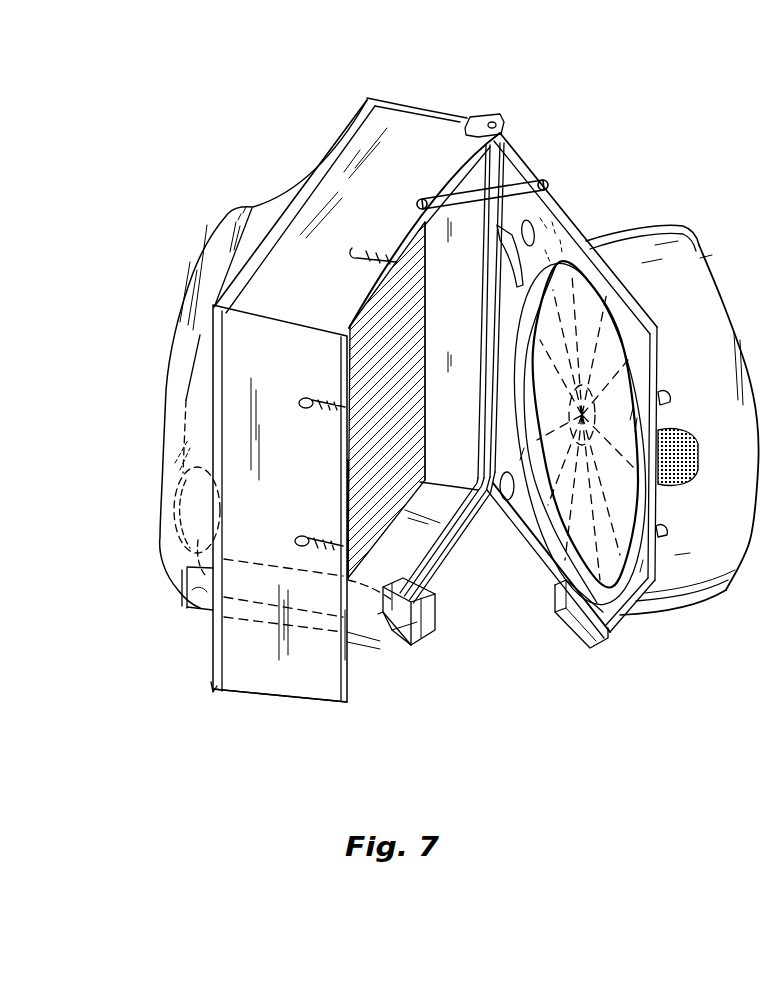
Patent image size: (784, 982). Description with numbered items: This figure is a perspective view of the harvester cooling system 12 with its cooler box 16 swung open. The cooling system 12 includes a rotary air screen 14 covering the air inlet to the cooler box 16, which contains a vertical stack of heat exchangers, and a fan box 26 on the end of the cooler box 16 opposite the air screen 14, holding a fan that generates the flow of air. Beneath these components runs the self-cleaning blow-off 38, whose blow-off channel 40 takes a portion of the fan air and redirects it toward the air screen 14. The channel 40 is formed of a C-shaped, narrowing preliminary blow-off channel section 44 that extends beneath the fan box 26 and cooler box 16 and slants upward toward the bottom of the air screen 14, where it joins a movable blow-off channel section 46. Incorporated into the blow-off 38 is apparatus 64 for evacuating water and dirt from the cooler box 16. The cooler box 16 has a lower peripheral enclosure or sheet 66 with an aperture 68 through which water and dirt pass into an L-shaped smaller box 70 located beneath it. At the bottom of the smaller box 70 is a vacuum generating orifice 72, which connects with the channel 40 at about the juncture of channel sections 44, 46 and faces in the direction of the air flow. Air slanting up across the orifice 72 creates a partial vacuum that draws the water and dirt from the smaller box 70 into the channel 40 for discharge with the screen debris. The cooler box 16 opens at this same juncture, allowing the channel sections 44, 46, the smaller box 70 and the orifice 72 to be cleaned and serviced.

The cooling system 12 is at (621, 90).
The rotary air screen 14 is at (693, 241).
The cooler box 16 is at (414, 103).
The fan box 26 is at (212, 235).
The self-cleaning blow-off 38 is at (437, 628).
The blow-off channel 40 is at (195, 612).
The preliminary blow-off channel section 44 is at (437, 647).
The movable blow-off channel section 46 is at (580, 642).
The apparatus for evacuating water and dirt 64 is at (378, 636).
The lower peripheral enclosure or sheet 66 is at (417, 540).
The aperture 68 is at (407, 572).
The smaller box 70 is at (345, 583).
The vacuum generating orifice 72 is at (405, 648).